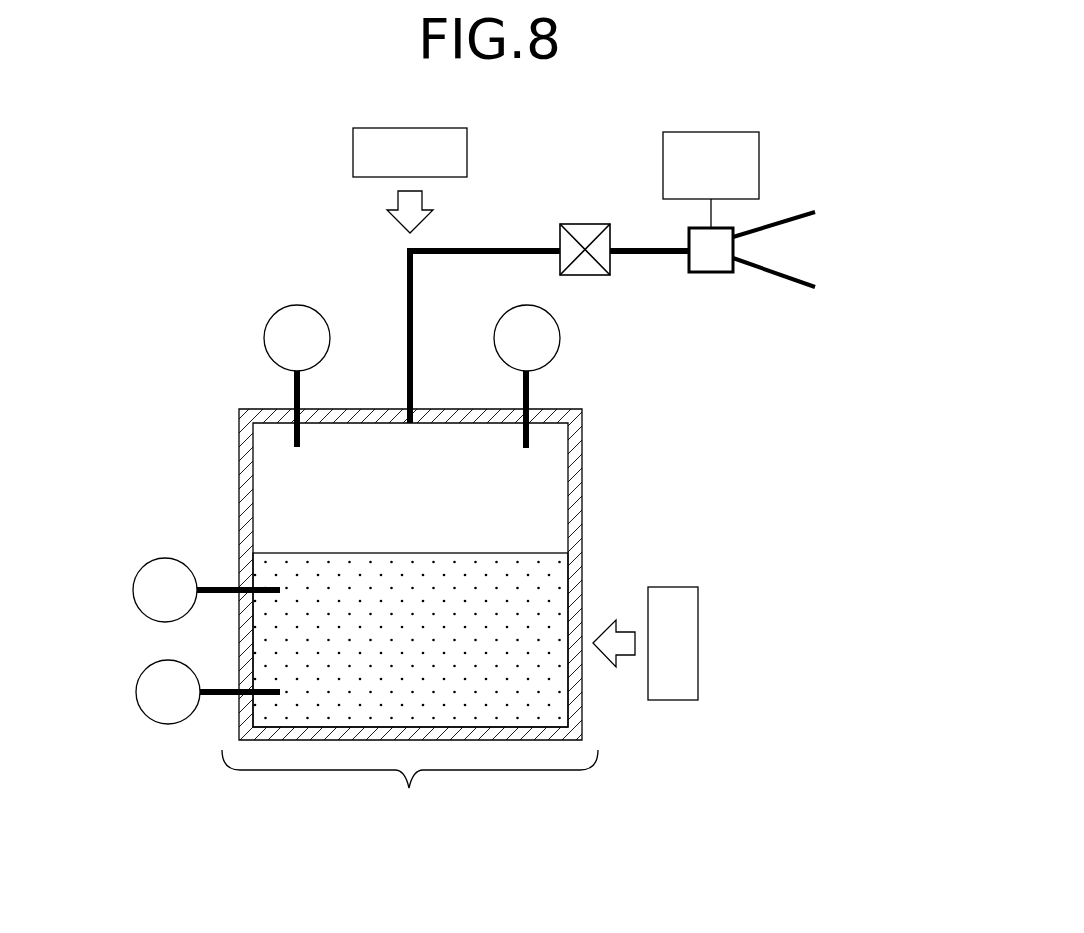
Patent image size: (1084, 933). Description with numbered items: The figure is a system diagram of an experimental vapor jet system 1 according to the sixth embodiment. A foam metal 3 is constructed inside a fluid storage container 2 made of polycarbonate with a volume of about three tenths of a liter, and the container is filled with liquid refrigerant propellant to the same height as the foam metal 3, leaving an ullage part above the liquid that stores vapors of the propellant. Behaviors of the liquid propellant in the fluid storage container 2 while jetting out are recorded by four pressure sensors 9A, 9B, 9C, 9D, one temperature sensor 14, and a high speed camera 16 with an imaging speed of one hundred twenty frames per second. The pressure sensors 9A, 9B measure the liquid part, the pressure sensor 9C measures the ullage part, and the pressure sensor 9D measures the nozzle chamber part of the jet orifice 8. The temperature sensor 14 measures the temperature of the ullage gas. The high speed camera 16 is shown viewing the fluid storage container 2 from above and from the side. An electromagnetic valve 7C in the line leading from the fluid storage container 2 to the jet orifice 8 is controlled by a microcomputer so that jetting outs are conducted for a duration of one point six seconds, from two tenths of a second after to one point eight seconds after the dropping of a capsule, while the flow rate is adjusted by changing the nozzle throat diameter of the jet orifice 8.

The vapor jet system 1 is at (433, 469).
The fluid storage container 2 is at (410, 620).
The foam metal 3 is at (490, 590).
The electromagnetic valve 7C is at (587, 233).
The jet orifice 8 is at (712, 262).
The pressure sensor 9A is at (136, 692).
The pressure sensor 9B is at (133, 590).
The pressure sensor 9C is at (263, 338).
The pressure sensor 9D is at (742, 143).
The temperature sensor 14 is at (560, 339).
The high speed camera 16 is at (367, 137).